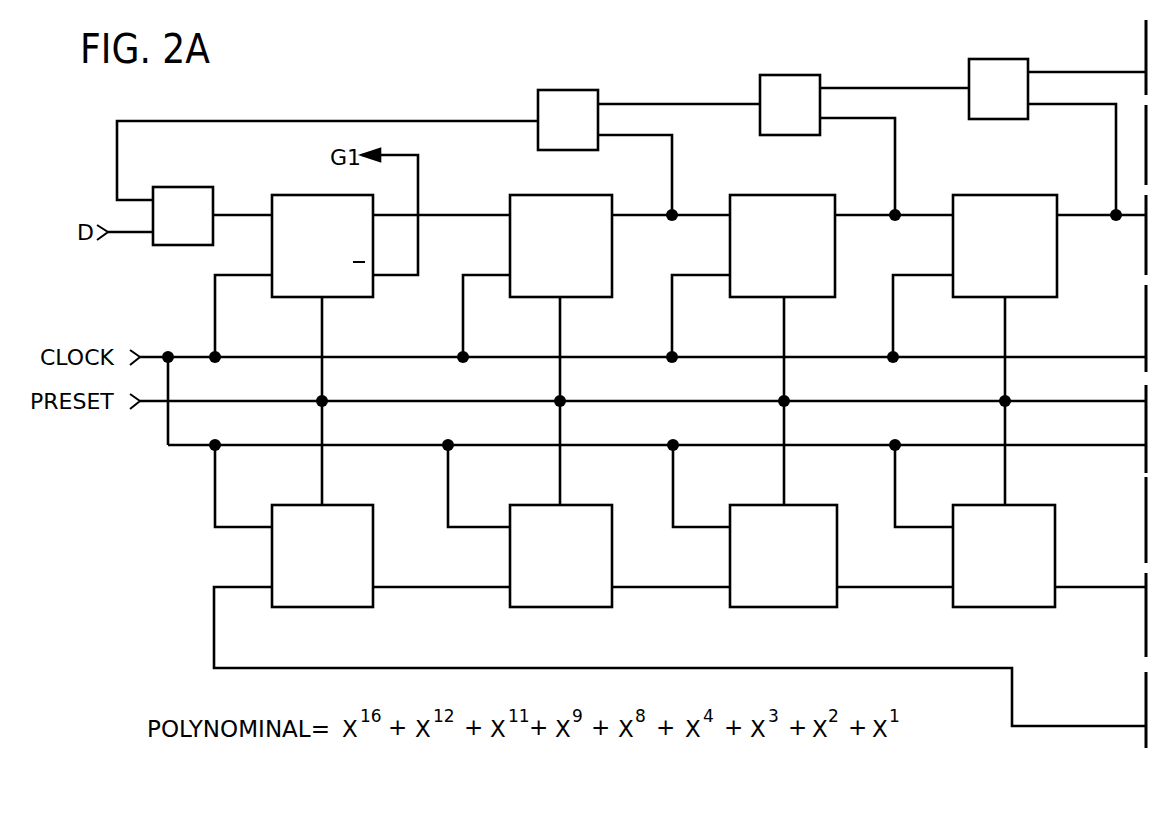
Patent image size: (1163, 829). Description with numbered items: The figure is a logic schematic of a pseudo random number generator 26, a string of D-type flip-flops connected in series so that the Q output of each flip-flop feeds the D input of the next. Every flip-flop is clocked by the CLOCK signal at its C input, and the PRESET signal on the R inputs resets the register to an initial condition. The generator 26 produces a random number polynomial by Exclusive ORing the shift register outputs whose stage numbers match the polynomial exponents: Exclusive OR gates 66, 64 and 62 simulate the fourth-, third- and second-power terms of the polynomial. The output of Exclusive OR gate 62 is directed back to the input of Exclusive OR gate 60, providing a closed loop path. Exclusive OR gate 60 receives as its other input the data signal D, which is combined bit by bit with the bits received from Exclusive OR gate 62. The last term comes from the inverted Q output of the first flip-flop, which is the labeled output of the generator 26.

The generator 26 is at (560, 70).
The Exclusive OR gate 60 is at (163, 191).
The Exclusive OR gate 62 is at (538, 107).
The Exclusive OR gate 64 is at (760, 90).
The Exclusive OR gate 66 is at (975, 70).